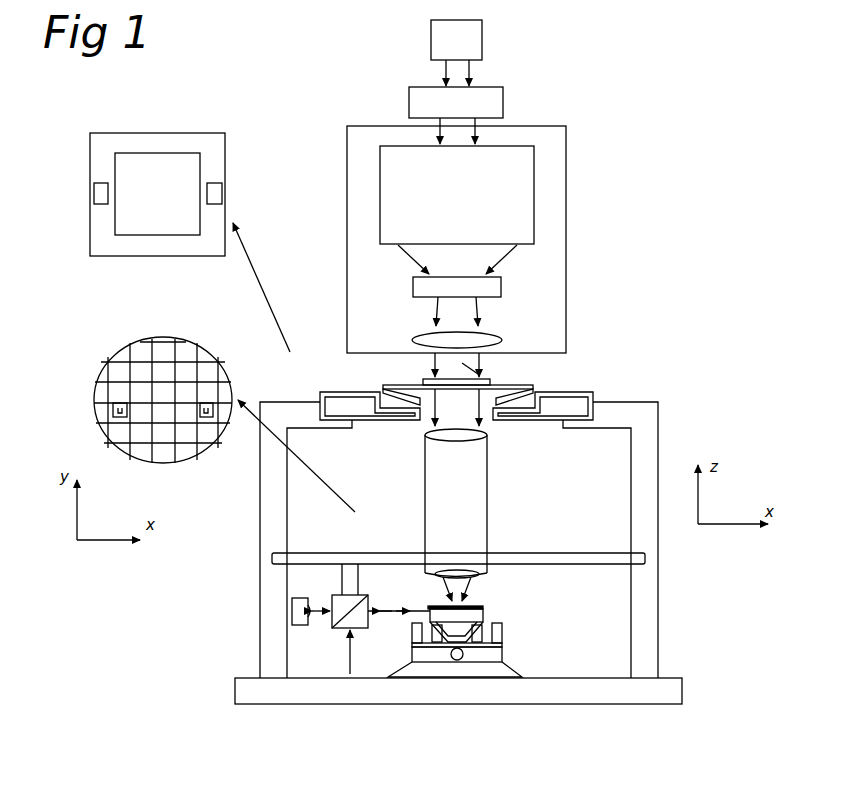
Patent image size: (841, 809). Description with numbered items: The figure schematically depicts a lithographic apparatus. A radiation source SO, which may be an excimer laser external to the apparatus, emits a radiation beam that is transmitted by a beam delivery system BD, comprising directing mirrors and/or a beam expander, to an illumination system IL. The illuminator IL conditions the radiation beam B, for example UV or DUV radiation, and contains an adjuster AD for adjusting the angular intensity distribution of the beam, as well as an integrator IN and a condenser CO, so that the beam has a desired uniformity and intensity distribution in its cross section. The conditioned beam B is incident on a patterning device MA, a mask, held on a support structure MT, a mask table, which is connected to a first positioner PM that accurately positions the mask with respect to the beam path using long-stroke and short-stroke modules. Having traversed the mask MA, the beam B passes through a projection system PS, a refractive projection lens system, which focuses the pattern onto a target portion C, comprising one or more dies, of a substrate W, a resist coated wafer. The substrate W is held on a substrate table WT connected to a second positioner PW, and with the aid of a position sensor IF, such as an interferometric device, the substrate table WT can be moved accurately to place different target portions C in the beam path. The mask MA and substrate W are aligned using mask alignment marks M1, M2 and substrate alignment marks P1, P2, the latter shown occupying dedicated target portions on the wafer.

The radiation source SO is at (482, 42).
The beam delivery system BD is at (503, 102).
The illumination system IL is at (566, 150).
The adjuster AD is at (517, 187).
The integrator IN is at (501, 287).
The condenser CO is at (490, 342).
The radiation beam B is at (480, 375).
The patterning device MA is at (423, 382).
The support structure MT is at (533, 388).
The first positioner PM is at (320, 393).
The projection system PS is at (488, 478).
The substrate W is at (412, 604).
The substrate table WT is at (487, 612).
The second positioner PW is at (494, 657).
The position sensor IF is at (328, 632).
The mask alignment mark M1 is at (214, 192).
The mask alignment mark M2 is at (101, 192).
The substrate alignment mark P1 is at (119, 403).
The substrate alignment mark P2 is at (207, 403).
The target portion C is at (162, 404).